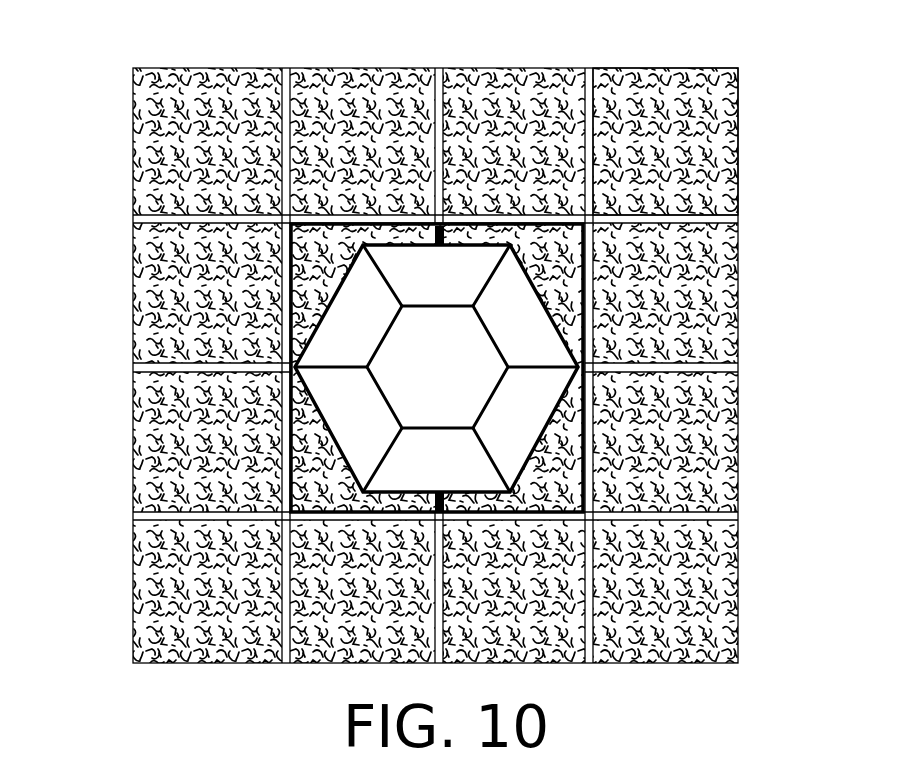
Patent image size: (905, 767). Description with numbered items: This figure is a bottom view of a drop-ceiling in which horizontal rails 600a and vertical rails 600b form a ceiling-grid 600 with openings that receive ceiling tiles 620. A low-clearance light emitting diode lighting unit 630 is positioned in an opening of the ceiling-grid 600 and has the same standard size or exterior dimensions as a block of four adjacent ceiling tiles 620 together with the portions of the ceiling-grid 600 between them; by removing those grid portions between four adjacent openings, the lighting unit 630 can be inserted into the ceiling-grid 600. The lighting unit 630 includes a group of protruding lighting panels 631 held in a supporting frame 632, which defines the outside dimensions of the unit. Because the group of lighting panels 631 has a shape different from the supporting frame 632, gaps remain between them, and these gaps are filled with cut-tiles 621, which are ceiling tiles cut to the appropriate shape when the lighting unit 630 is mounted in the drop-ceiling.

The ceiling-grid 600 is at (97, 80).
The horizontal rails 600a is at (140, 516).
The vertical rails 600b is at (590, 70).
The ceiling tiles 620 is at (657, 162).
The cut-tiles 621 is at (558, 475).
The low-clearance light emitting diode lighting unit 630 is at (437, 367).
The protruding lighting panels 631 is at (515, 325).
The supporting frame 632 is at (440, 233).